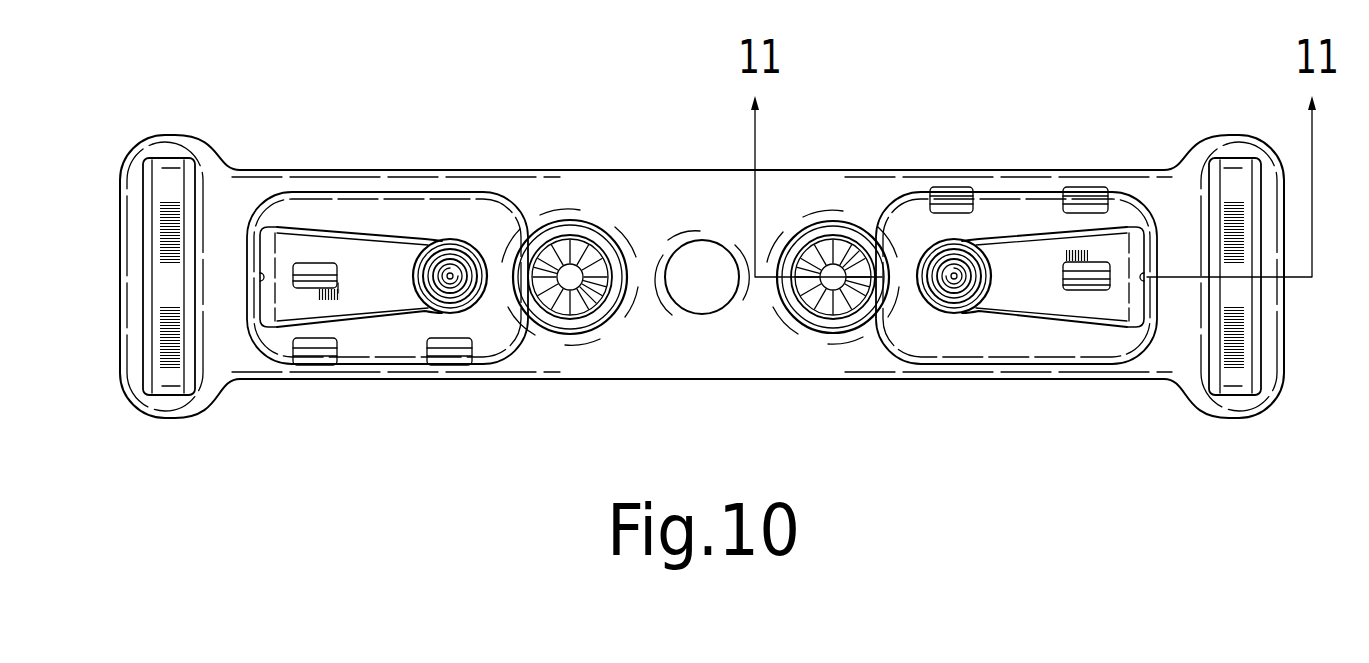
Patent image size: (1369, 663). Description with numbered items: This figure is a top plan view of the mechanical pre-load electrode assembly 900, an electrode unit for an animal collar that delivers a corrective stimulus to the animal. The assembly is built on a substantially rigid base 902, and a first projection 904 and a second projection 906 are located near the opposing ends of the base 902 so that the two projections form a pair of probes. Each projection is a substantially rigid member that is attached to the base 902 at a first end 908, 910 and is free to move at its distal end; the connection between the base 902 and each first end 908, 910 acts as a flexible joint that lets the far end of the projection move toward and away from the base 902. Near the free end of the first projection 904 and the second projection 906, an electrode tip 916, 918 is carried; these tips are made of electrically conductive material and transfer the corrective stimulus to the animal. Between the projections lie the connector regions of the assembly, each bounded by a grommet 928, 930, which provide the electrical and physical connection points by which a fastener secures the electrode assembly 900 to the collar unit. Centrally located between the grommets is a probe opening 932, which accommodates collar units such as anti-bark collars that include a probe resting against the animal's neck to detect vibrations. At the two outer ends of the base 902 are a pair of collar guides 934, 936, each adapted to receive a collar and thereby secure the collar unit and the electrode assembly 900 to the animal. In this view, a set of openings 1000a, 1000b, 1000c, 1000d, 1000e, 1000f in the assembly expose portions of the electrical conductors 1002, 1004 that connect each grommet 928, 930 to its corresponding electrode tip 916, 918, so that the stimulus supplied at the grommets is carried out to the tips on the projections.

The mechanical pre-load electrode assembly 900 is at (445, 484).
The base 902 is at (733, 343).
The first projection 904 is at (396, 273).
The second projection 906 is at (1027, 270).
The first end 908 is at (267, 253).
The first end 910 is at (1137, 308).
The electrode tip 916 is at (463, 262).
The electrode tip 918 is at (940, 263).
The grommet 928 is at (563, 303).
The grommet 930 is at (833, 305).
The probe opening 932 is at (707, 263).
The collar guide 934 is at (163, 367).
The collar guide 936 is at (1233, 358).
The opening 1000a is at (310, 263).
The opening 1000b is at (313, 365).
The opening 1000c is at (450, 365).
The opening 1000d is at (1100, 262).
The opening 1000e is at (957, 190).
The opening 1000f is at (1085, 188).
The electrical conductor 1002 is at (300, 277).
The electrical conductor 1004 is at (1080, 288).